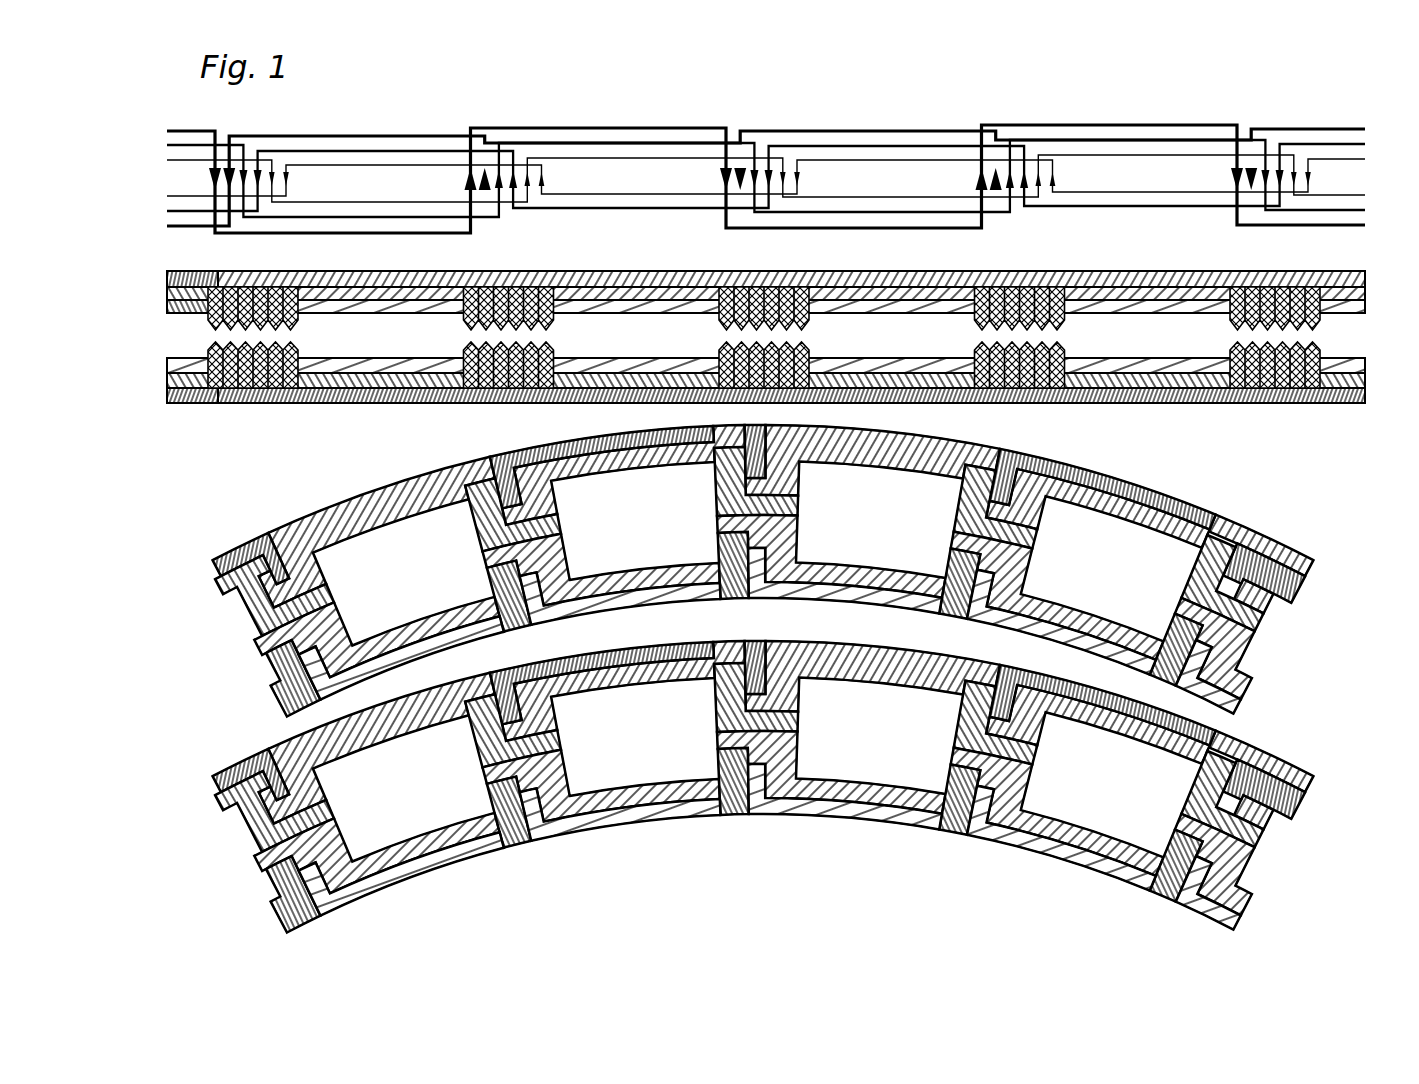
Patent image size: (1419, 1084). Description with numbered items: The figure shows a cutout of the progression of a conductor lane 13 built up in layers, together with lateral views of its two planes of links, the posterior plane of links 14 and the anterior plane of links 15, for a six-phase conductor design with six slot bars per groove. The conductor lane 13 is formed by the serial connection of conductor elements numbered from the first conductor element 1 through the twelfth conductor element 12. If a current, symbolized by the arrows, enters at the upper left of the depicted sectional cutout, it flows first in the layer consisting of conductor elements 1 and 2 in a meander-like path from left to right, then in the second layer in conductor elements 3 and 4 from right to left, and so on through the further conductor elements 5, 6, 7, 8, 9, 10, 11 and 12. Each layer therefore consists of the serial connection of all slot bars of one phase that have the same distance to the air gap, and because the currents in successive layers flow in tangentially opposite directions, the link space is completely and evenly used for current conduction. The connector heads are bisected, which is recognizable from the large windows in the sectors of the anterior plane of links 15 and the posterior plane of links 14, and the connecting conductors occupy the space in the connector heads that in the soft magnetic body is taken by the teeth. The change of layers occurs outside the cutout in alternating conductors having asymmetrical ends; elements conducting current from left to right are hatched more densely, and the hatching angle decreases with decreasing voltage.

The conductor element 1 is at (167, 276).
The conductor element 2 is at (1365, 396).
The conductor element 3 is at (1365, 275).
The conductor element 4 is at (167, 396).
The conductor element 5 is at (167, 293).
The conductor element 6 is at (1365, 380).
The conductor element 7 is at (1365, 292).
The conductor element 8 is at (167, 380).
The conductor element 9 is at (167, 307).
The conductor element 10 is at (1365, 362).
The conductor element 11 is at (1365, 306).
The conductor element 12 is at (167, 364).
The conductor lane 13 is at (167, 131).
The posterior plane of links 14 is at (250, 636).
The anterior plane of links 15 is at (250, 854).